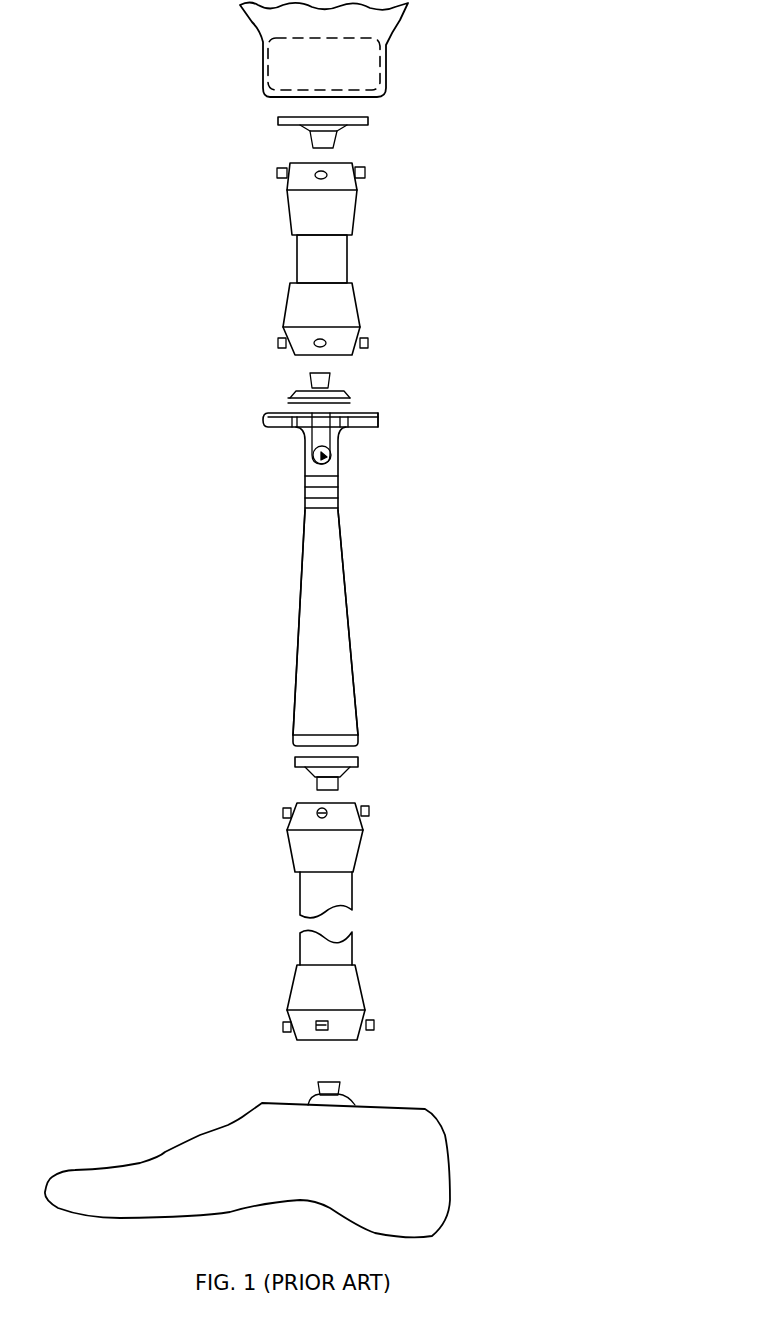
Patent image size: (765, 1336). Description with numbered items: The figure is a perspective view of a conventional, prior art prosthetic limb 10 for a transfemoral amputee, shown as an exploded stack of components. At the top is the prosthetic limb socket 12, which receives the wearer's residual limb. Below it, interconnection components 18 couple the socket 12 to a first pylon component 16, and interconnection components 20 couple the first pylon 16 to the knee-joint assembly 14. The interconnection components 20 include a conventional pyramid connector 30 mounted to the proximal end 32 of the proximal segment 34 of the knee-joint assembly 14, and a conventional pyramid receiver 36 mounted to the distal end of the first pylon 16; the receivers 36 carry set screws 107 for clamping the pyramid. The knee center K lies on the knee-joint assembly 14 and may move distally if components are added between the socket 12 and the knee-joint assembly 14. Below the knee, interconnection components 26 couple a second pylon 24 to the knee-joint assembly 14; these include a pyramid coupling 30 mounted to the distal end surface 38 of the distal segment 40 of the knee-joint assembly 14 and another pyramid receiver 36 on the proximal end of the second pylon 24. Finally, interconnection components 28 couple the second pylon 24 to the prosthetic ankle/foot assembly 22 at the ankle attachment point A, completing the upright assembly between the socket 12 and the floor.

The prosthetic limb 10 is at (562, 1224).
The prosthetic limb socket 12 is at (387, 26).
The knee-joint assembly 14 is at (347, 583).
The first pylon component 16 is at (340, 262).
The interconnection components 18 is at (427, 57).
The interconnection components 20 is at (427, 292).
The prosthetic ankle/foot assembly 22 is at (428, 1137).
The second pylon 24 is at (345, 940).
The interconnection components 26 is at (427, 738).
The interconnection components 28 is at (433, 983).
The pyramid connector 30 is at (300, 391).
The proximal end 32 is at (378, 383).
The proximal segment 34 is at (275, 428).
The pyramid receiver 36 is at (345, 308).
The distal end surface 38 is at (348, 752).
The distal segment 40 is at (340, 665).
The set screws 107 is at (318, 340).
The knee center K is at (333, 454).
The ankle attachment A is at (328, 1105).